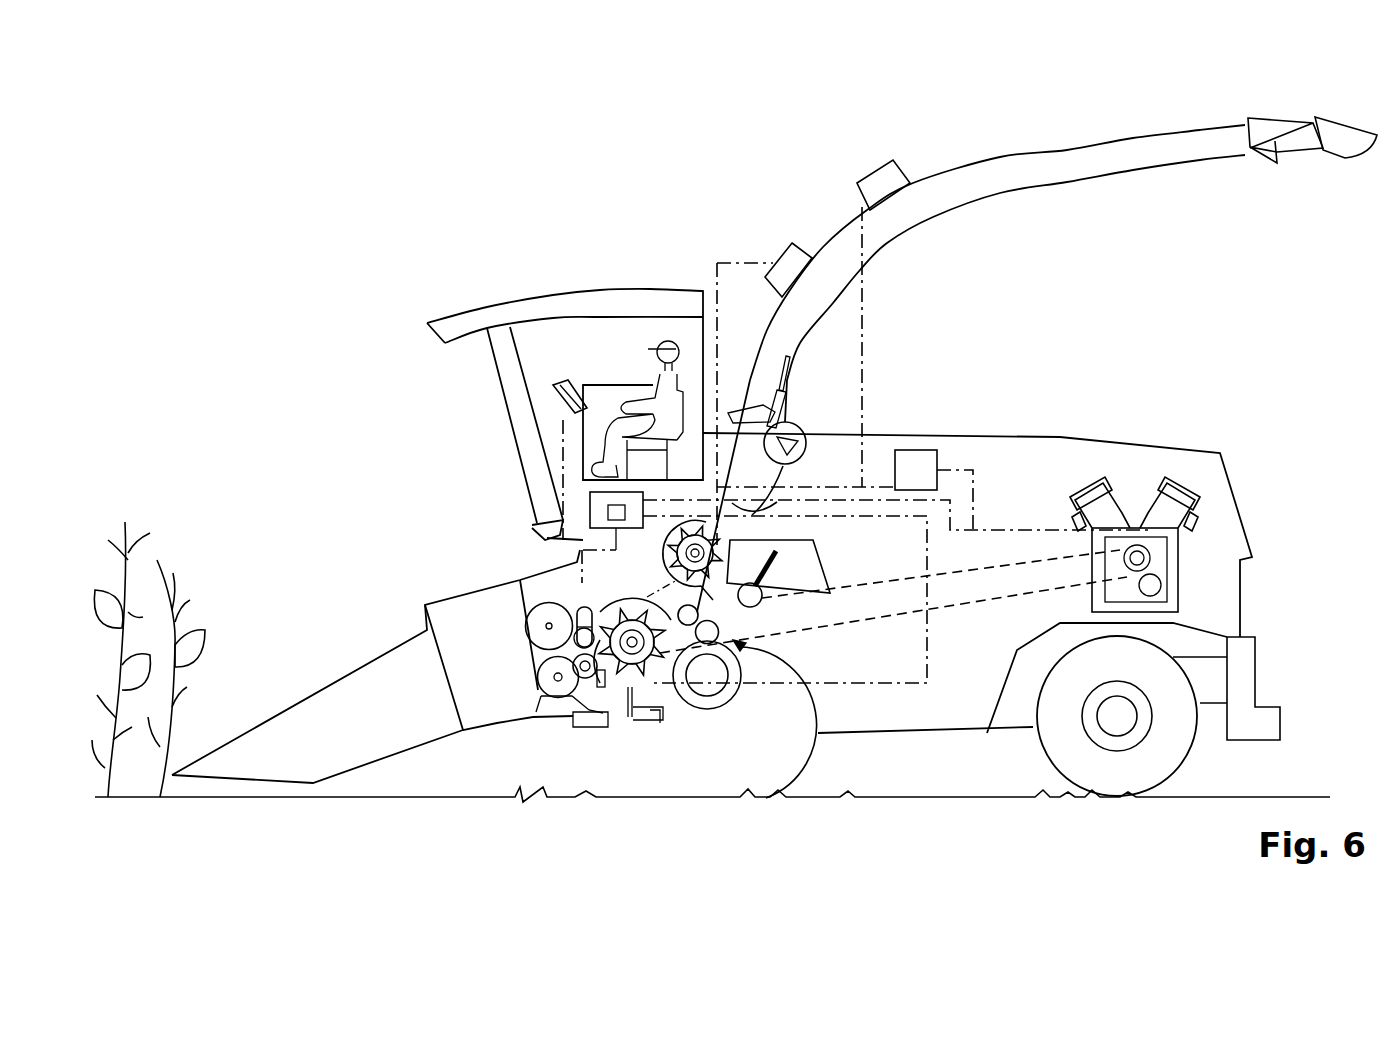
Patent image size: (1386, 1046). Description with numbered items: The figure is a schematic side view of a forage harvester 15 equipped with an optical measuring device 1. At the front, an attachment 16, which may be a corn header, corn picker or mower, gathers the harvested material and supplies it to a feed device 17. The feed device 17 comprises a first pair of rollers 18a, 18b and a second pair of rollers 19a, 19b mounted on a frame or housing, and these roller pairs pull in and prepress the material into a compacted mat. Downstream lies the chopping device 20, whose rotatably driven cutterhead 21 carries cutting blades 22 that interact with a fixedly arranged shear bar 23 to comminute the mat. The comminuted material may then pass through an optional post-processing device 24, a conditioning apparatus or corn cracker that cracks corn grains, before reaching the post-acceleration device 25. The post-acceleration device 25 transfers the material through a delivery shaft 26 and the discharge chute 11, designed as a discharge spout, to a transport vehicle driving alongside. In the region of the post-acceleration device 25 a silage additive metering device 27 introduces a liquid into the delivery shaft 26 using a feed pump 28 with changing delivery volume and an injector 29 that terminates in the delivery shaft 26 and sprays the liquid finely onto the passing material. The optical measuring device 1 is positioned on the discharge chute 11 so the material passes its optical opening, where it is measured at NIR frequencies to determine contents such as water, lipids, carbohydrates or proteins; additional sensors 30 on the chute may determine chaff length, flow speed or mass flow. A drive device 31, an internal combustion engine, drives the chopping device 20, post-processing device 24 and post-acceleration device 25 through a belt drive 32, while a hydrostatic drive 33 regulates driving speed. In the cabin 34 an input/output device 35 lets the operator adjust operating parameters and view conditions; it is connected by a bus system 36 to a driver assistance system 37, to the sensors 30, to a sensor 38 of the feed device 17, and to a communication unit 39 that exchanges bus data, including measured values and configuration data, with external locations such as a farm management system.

The optical measuring device 1 is at (800, 240).
The discharge chute 11 is at (983, 173).
The forage harvester 15 is at (290, 130).
The attachment 16 is at (320, 730).
The feed device 17 is at (575, 742).
The roller of first pair of rollers 18a is at (530, 624).
The roller of first pair of rollers 18b is at (552, 687).
The roller of second pair of rollers 19a is at (576, 612).
The roller of second pair of rollers 19b is at (585, 672).
The chopping device 20 is at (640, 650).
The cutterhead 21 is at (718, 709).
The cutting blades 22 is at (652, 700).
The shear bar 23 is at (628, 695).
The post-processing device 24 is at (792, 712).
The post-acceleration device 25 is at (805, 440).
The delivery shaft 26 is at (710, 520).
The silage additive metering device 27 is at (806, 410).
The feed pump 28 is at (745, 523).
The injector 29 is at (800, 470).
The additional sensors 30 is at (880, 178).
The drive device 31 is at (1173, 517).
The belt drive 32 is at (988, 600).
The hydrostatic drive 33 is at (684, 663).
The cabin 34 is at (461, 308).
The input/output device 35 is at (565, 378).
The bus system 36 is at (717, 263).
The driver assistance system 37 is at (590, 500).
The sensor of the feed device 38 is at (584, 633).
The communication unit 39 is at (937, 452).